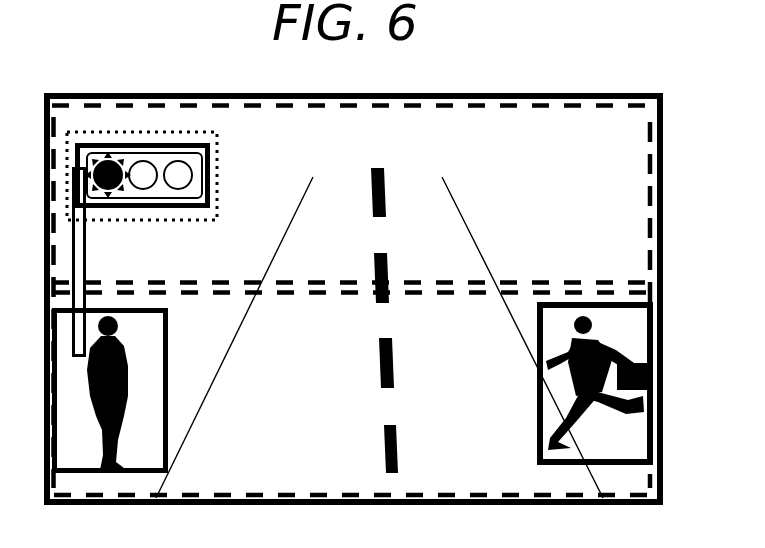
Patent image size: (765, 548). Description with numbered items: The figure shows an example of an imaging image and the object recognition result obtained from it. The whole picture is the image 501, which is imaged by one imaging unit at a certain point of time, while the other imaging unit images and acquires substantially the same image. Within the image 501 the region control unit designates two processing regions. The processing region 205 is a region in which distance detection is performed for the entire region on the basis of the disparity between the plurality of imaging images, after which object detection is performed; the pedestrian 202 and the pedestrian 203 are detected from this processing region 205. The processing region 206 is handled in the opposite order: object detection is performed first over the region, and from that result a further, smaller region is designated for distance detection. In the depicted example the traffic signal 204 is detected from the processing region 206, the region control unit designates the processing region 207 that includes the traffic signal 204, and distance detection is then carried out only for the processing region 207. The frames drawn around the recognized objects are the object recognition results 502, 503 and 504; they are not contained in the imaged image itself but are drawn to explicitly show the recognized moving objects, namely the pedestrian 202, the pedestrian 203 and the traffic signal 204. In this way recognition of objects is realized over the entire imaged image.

The image 501 is at (353, 275).
The processing region 207 is at (169, 166).
The object recognition result 504 is at (143, 205).
The traffic signal 204 is at (153, 208).
The processing region 206 is at (351, 252).
The processing region 205 is at (351, 324).
The object recognition result 503 is at (138, 391).
The pedestrian 203 is at (119, 393).
The object recognition result 502 is at (562, 383).
The pedestrian 202 is at (598, 387).